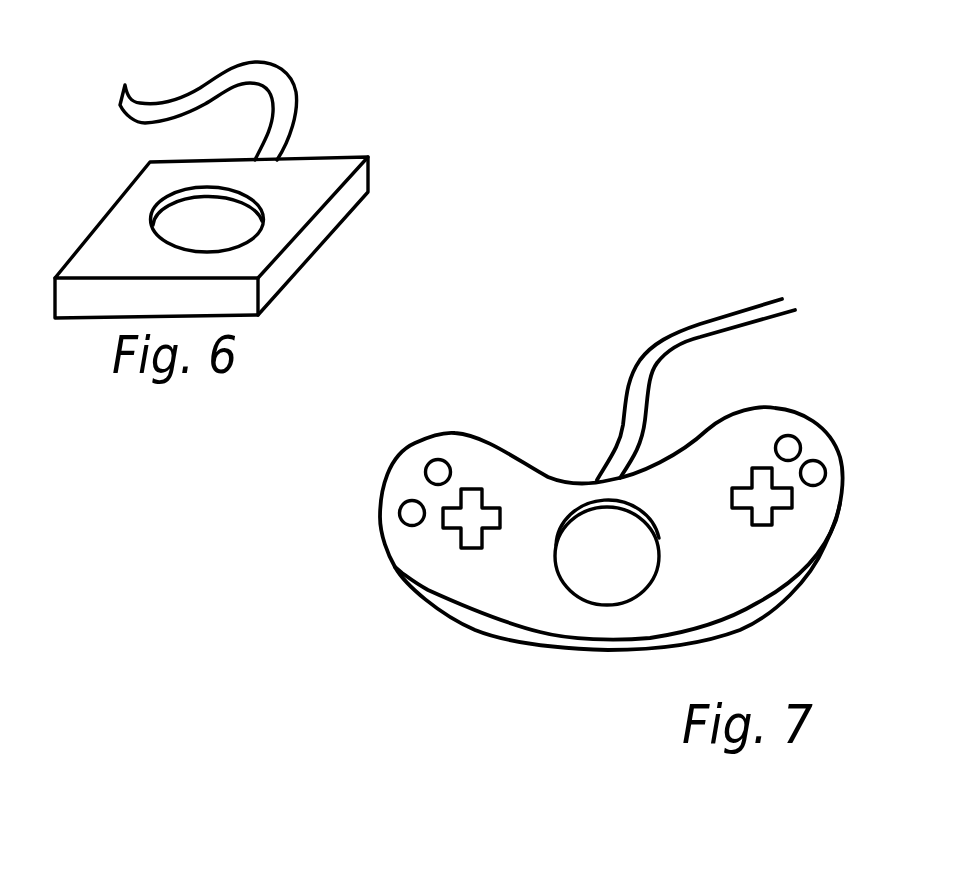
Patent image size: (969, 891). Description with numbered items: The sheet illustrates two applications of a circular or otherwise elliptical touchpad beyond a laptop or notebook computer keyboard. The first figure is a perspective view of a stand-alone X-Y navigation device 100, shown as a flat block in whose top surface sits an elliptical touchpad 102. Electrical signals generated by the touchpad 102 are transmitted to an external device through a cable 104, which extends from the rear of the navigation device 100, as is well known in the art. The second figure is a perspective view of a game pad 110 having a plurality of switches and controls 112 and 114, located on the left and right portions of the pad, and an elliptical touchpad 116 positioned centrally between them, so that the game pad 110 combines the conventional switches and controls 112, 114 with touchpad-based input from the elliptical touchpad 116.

In FIG. 6, the stand-alone X-Y navigation device 100 is at (255, 187).
In FIG. 6, the elliptical touchpad 102 is at (180, 189).
In FIG. 6, the cable 104 is at (292, 74).
In FIG. 7, the game pad 110 is at (611, 504).
In FIG. 7, the switches and controls 112 is at (456, 587).
In FIG. 7, the switches and controls 114 is at (802, 548).
In FIG. 7, the elliptical touchpad 116 is at (587, 595).